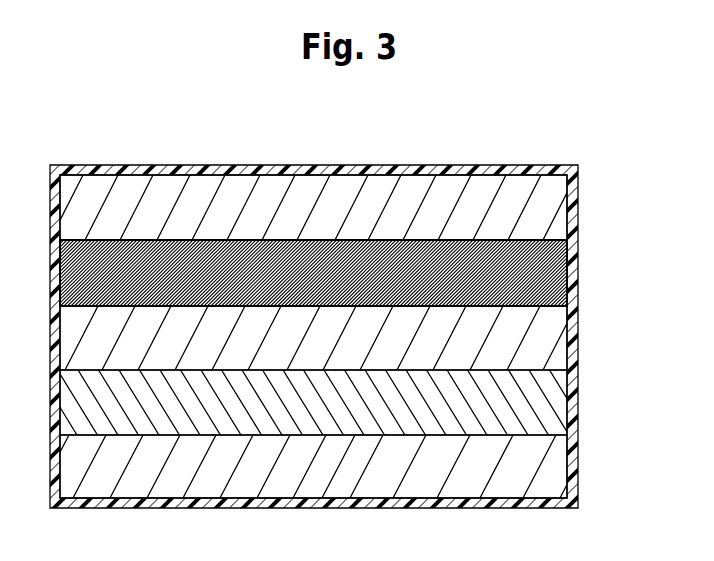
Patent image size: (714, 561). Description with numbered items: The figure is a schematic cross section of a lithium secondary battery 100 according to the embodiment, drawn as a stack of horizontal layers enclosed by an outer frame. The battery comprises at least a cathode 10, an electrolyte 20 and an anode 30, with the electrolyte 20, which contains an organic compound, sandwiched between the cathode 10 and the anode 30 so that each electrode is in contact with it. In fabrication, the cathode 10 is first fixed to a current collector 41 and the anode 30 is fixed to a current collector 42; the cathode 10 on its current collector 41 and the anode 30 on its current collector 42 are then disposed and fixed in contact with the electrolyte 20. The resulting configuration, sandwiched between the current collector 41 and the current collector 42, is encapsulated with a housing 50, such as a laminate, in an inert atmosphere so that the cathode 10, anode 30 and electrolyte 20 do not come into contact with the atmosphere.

The lithium secondary battery 100 is at (434, 149).
The housing 50 is at (312, 168).
The current collector 41 is at (558, 208).
The cathode 10 is at (558, 273).
The electrolyte 20 is at (558, 337).
The anode 30 is at (558, 400).
The current collector 42 is at (558, 473).